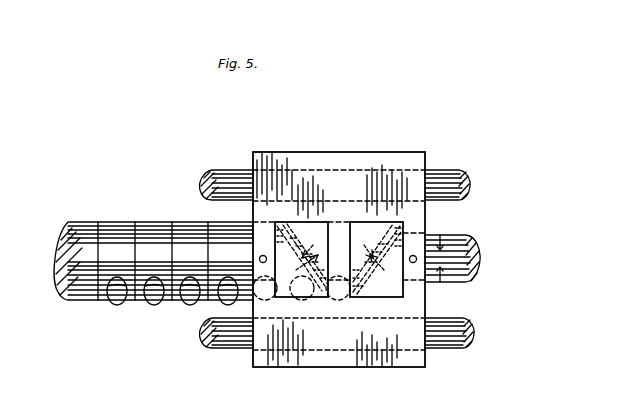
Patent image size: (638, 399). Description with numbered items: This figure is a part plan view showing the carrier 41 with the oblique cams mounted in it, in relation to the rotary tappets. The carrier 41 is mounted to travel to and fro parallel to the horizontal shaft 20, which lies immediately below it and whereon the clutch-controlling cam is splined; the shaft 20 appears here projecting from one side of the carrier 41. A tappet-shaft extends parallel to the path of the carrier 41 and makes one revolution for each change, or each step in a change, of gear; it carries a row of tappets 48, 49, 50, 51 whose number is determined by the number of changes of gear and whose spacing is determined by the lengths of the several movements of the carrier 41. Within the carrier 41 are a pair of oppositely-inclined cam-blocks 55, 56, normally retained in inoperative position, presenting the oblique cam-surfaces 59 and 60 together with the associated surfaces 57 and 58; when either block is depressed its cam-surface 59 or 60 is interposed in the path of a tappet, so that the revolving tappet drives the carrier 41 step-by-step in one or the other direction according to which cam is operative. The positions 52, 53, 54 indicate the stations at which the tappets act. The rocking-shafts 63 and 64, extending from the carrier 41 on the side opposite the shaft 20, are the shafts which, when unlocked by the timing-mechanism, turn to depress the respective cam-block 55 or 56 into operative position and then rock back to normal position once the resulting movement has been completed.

The horizontal shaft 20 is at (481, 258).
The carrier 41 is at (355, 152).
The knob 48 is at (109, 302).
The knob 49 is at (150, 299).
The knob 50 is at (186, 299).
The knob 51 is at (222, 297).
The port 52 is at (268, 300).
The port 53 is at (304, 300).
The port 54 is at (340, 300).
The chamber 55 is at (298, 225).
The chamber 56 is at (364, 225).
The passage 57 is at (298, 267).
The passage 58 is at (382, 269).
The cam-surface 59 is at (311, 243).
The cam-surface 60 is at (364, 243).
The rocking-shaft 63 is at (226, 170).
The rocking-shaft 64 is at (230, 348).